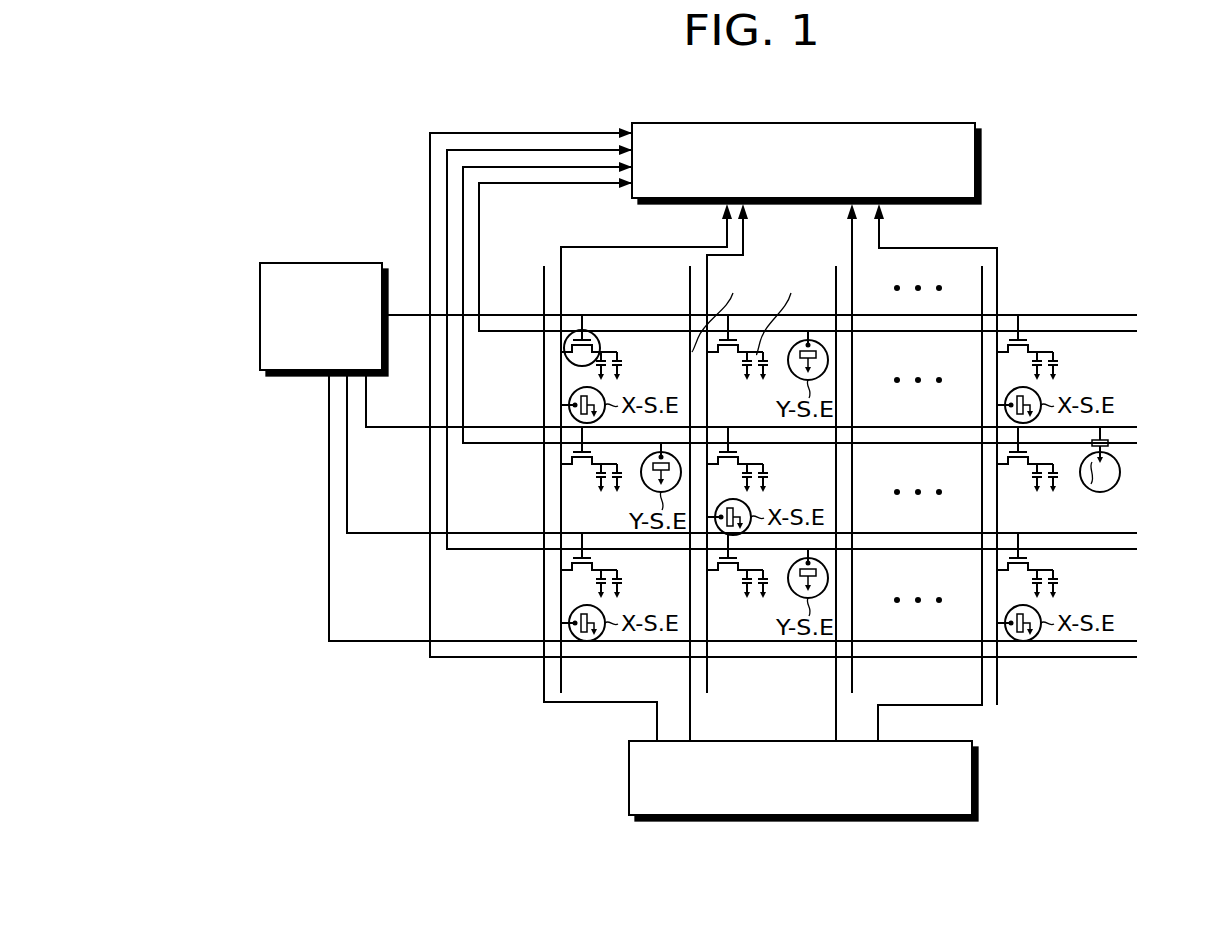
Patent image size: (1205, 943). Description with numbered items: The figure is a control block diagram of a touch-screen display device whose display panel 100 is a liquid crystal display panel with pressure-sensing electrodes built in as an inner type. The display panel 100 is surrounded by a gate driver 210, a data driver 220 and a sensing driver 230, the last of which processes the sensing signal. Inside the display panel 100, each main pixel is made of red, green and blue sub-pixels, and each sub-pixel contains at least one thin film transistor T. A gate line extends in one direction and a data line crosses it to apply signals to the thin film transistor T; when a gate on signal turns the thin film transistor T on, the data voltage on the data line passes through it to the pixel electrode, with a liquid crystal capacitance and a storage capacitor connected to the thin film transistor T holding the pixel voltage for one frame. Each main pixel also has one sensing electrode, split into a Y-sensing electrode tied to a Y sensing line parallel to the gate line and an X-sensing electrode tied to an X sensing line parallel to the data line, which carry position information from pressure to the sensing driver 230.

The display panel 100 is at (767, 434).
The gate driver 210 is at (260, 335).
The data driver 220 is at (629, 778).
The sensing driver 230 is at (930, 123).
The thin film transistor T is at (596, 337).